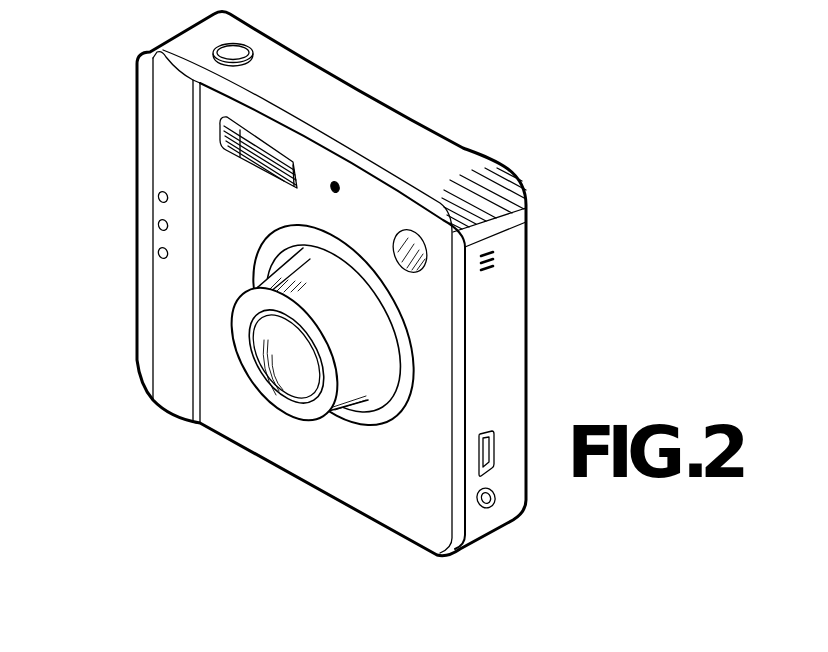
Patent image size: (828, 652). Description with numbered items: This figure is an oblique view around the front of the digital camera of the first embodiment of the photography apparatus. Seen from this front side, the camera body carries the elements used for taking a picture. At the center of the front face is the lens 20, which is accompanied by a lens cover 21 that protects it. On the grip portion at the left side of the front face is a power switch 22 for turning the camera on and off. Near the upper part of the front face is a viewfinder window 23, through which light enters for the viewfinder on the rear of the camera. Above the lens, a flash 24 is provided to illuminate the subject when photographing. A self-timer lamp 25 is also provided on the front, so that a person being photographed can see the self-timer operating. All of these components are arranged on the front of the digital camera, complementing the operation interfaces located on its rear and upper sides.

The lens 20 is at (277, 346).
The lens cover 21 is at (313, 383).
The power switch 22 is at (163, 343).
The viewfinder window 23 is at (426, 268).
The flash 24 is at (220, 127).
The self-timer lamp 25 is at (170, 223).